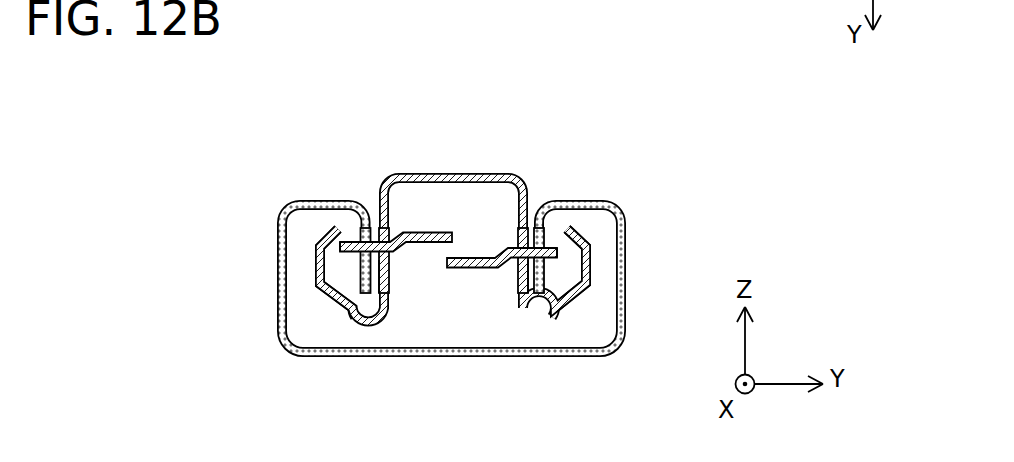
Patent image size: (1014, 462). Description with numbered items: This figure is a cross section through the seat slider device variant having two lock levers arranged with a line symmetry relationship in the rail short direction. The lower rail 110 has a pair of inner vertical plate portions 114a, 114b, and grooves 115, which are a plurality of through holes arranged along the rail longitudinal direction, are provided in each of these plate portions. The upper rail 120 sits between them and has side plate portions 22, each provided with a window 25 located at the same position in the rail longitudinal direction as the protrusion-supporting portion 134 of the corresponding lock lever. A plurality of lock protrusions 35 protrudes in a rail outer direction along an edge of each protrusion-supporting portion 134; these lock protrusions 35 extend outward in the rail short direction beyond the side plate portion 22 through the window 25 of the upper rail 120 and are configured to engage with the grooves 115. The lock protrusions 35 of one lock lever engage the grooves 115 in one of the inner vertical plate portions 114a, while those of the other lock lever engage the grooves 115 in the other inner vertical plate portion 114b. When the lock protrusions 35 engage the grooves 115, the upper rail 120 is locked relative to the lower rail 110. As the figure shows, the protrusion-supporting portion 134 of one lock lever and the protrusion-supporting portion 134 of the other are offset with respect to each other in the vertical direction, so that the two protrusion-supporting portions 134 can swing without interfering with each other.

The lower rail 110 is at (627, 200).
The upper rail 120 is at (501, 163).
The window 25 is at (388, 233).
The grooves 115 is at (362, 234).
The protrusion-supporting portion 134 is at (432, 232).
The lock protrusions 35 is at (342, 248).
The side plate portions 22 is at (390, 285).
The inner vertical plate portions 114a is at (354, 292).
The contact spring piece 114b is at (565, 305).